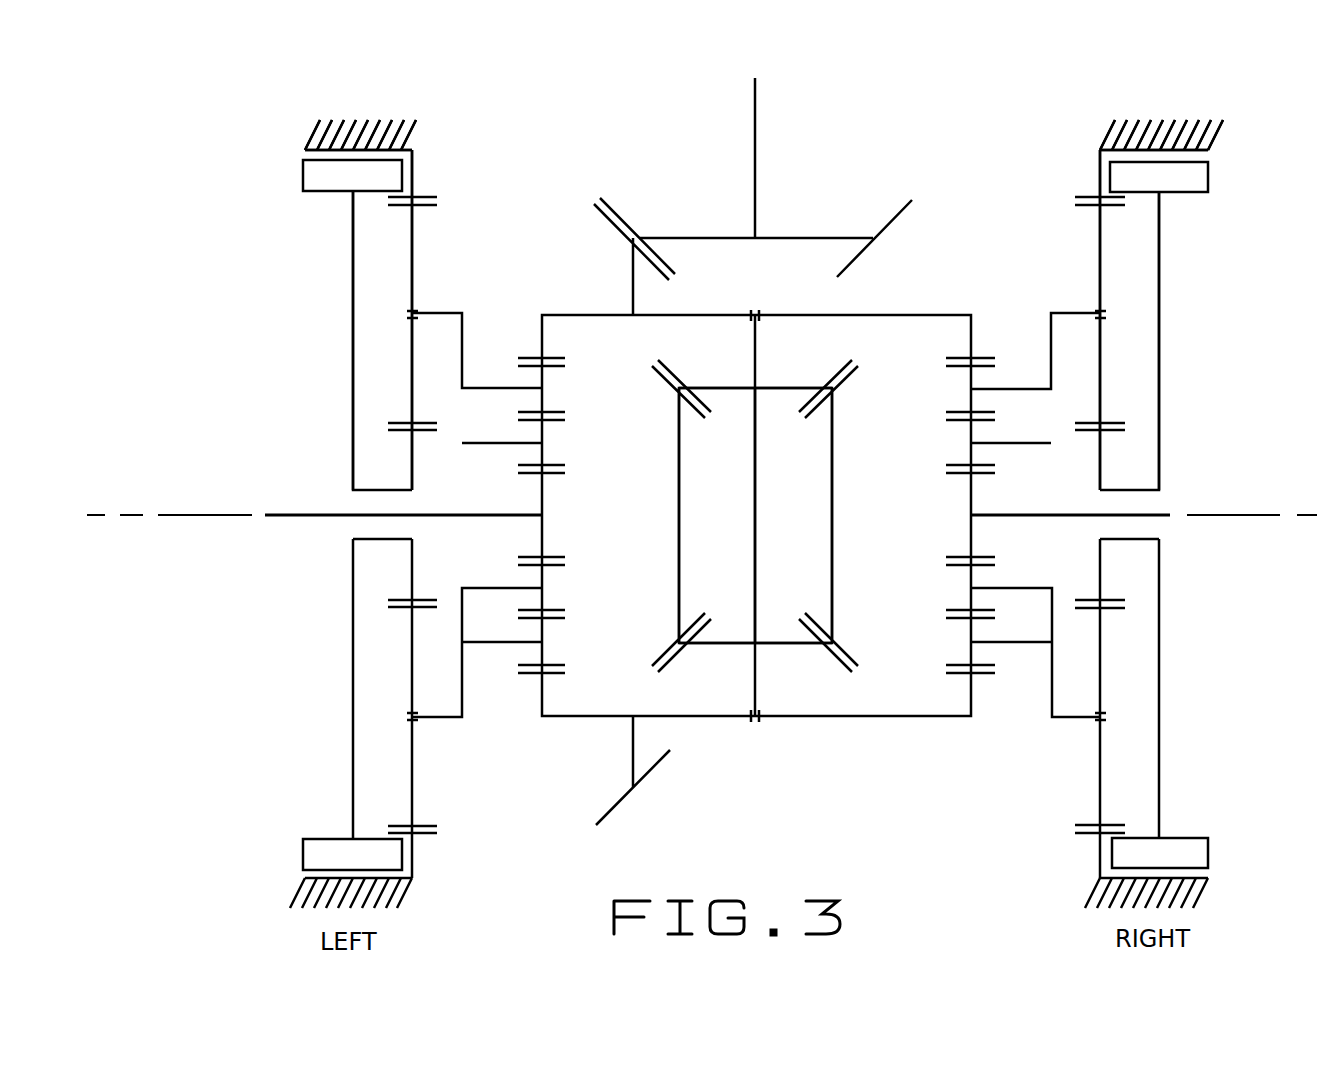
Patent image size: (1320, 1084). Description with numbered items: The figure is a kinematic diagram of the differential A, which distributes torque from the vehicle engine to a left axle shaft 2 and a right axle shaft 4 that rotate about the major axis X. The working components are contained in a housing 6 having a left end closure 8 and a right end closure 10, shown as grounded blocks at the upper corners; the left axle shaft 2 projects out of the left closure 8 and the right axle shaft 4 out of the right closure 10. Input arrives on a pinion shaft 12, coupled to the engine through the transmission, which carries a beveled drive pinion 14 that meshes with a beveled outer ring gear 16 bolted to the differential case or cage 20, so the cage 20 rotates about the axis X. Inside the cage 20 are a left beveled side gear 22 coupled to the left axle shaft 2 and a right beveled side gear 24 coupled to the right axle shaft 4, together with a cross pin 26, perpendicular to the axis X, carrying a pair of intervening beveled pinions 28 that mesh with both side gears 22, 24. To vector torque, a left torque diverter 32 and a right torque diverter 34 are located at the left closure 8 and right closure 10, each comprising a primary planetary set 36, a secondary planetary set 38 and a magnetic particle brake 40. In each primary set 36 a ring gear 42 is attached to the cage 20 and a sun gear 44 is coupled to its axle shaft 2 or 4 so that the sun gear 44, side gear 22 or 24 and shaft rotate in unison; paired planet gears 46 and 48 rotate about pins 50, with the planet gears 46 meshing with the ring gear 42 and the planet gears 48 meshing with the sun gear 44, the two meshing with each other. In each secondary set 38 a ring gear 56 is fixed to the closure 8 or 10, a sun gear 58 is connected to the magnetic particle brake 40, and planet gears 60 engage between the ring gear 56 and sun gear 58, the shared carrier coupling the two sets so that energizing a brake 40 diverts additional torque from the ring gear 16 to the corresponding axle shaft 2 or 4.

The left axle shaft 2 is at (290, 515).
The right axle shaft 4 is at (1148, 518).
The housing 6 is at (372, 122).
The left end closure 8 is at (372, 122).
The right end closure 10 is at (1175, 122).
The pinion shaft 12 is at (755, 148).
The beveled drive pinion 14 is at (697, 238).
The beveled outer ring gear 16 is at (633, 280).
The differential case or cage 20 is at (888, 315).
The left beveled side gear 22 is at (679, 465).
The right beveled side gear 24 is at (832, 470).
The cross pin 26 is at (757, 515).
The intervening beveled pinions 28 is at (773, 388).
The left torque diverter 32 is at (503, 258).
The right torque diverter 34 is at (1010, 278).
The primary planetary set 36 is at (918, 657).
The secondary planetary set 38 is at (440, 767).
The magnetic particle brake 40 is at (303, 172).
The ring gear 42 is at (542, 345).
The sun gear 44 is at (542, 497).
The planet gears 46 is at (542, 383).
The planet gears 48 is at (542, 455).
The pins 50 is at (462, 333).
The ring gear 56 is at (1100, 167).
The sun gear 58 is at (1100, 452).
The planet gears 60 is at (1100, 227).
The differential A is at (943, 136).
The major axis X is at (165, 515).